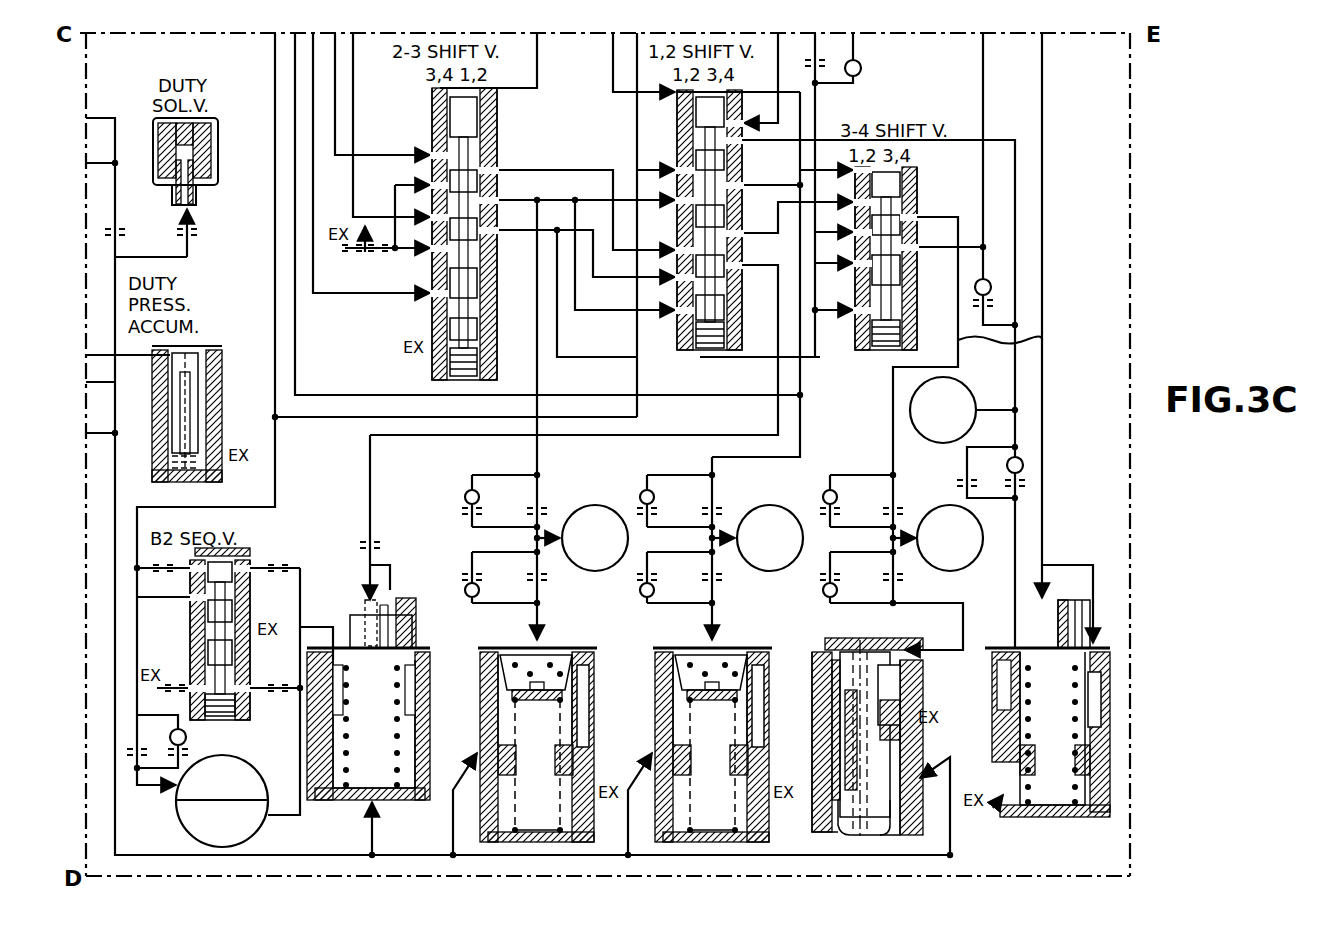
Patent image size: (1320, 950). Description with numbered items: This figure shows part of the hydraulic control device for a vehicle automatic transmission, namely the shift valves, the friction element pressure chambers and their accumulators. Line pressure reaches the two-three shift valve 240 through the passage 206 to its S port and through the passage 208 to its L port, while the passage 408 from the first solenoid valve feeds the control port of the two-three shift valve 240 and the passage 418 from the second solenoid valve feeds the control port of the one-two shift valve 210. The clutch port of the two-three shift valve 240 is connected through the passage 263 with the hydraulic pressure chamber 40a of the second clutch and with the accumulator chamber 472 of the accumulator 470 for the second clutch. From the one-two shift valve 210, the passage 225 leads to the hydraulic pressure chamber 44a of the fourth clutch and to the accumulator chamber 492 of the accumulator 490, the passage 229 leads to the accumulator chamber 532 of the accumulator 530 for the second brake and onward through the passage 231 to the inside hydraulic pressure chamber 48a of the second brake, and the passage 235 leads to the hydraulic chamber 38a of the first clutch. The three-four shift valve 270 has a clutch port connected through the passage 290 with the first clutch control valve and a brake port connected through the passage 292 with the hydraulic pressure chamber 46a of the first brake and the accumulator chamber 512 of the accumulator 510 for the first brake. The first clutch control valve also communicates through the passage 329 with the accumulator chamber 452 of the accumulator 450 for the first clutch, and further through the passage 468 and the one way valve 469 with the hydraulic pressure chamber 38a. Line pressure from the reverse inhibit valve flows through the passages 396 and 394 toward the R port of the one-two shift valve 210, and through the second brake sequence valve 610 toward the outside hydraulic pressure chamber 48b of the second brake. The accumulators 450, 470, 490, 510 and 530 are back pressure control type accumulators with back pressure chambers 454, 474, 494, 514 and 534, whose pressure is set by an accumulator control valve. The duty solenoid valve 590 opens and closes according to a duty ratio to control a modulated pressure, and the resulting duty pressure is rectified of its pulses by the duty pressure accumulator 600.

The passage 208 is at (336, 95).
The passage 206 is at (313, 135).
The passage 408 is at (538, 68).
The passage 418 is at (612, 92).
The passage 290 is at (983, 58).
The passage 329 is at (1043, 76).
The passage 235 is at (1016, 150).
The duty solenoid valve 590 is at (205, 198).
The passage 396 is at (275, 288).
The duty pressure accumulator 600 is at (226, 417).
The passage 394 is at (312, 418).
The 2-3 shift valve 240 is at (428, 360).
The 1-2 shift valve 210 is at (700, 358).
The 3-4 shift valve 270 is at (858, 338).
The passage 292 is at (991, 410).
The hydraulic pressure chamber 38a is at (968, 400).
The passage 225 is at (782, 426).
The passage 263 is at (540, 472).
The passage 229 is at (371, 492).
The hydraulic pressure chamber 40a is at (597, 507).
The hydraulic pressure chamber 44a is at (770, 507).
The hydraulic pressure chamber 46a is at (968, 563).
The one way valve 469 is at (1020, 483).
The passage 468 is at (1043, 528).
The B2 sequence valve 610 is at (255, 548).
The accumulator 530 is at (350, 622).
The back pressure chamber 534 is at (385, 787).
The accumulator chamber 532 is at (275, 655).
The passage 231 is at (303, 803).
The inside hydraulic pressure chamber 48a is at (256, 826).
The outside hydraulic pressure chamber 48b is at (178, 790).
The accumulator 470 is at (573, 645).
The accumulator chamber 472 is at (520, 648).
The back pressure chamber 474 is at (590, 690).
The accumulator 490 is at (742, 645).
The accumulator chamber 492 is at (695, 648).
The back pressure chamber 494 is at (775, 660).
The accumulator 510 is at (880, 638).
The accumulator chamber 512 is at (905, 688).
The back pressure chamber 514 is at (832, 765).
The accumulator chamber 452 is at (1013, 640).
The accumulator 450 is at (1027, 812).
The back pressure chamber 454 is at (1103, 700).